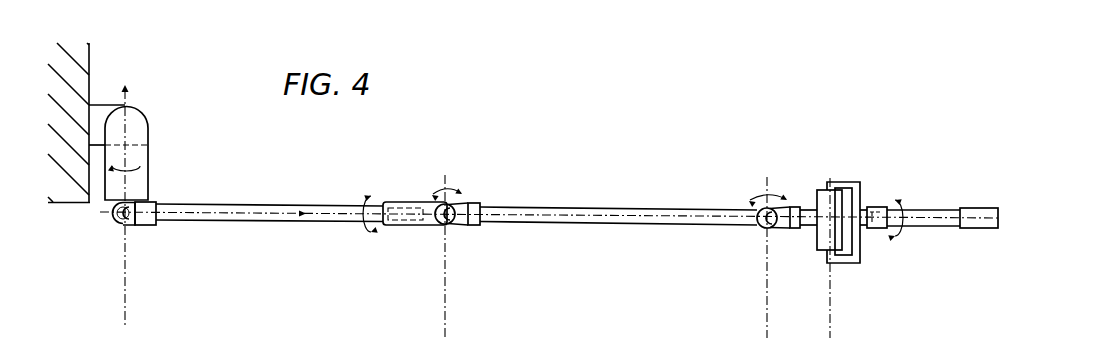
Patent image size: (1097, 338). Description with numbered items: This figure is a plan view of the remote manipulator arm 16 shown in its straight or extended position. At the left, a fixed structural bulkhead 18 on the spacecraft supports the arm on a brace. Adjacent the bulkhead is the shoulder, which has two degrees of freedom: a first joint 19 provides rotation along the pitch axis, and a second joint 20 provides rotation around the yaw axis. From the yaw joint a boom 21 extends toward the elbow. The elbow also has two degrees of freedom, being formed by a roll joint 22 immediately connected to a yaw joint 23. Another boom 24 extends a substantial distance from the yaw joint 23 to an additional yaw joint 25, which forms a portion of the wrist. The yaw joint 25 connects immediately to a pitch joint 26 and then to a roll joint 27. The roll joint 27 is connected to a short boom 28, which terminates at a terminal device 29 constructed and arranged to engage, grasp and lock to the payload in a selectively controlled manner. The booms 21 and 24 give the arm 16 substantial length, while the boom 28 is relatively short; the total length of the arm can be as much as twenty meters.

The remote manipulator arm 16 is at (717, 121).
The fixed structural bulkhead 18 is at (90, 66).
The first joint 19 is at (149, 148).
The second joint 20 is at (112, 223).
The boom 21 is at (262, 204).
The roll joint 22 is at (408, 202).
The yaw joint 23 is at (477, 203).
The boom 24 is at (621, 207).
The yaw joint 25 is at (760, 229).
The pitch joint 26 is at (830, 180).
The roll joint 27 is at (877, 230).
The short boom 28 is at (930, 209).
The terminal device 29 is at (985, 208).